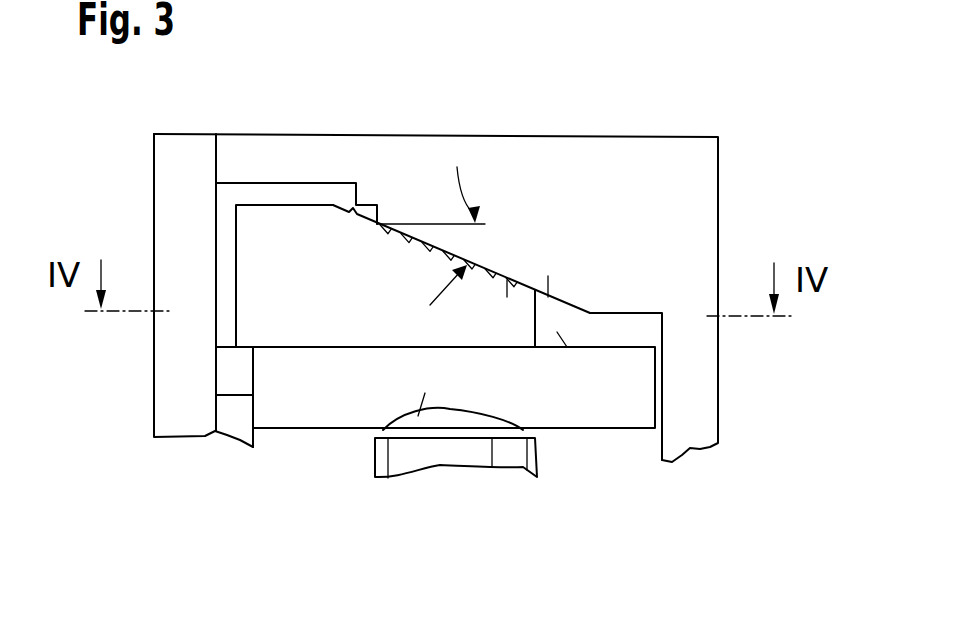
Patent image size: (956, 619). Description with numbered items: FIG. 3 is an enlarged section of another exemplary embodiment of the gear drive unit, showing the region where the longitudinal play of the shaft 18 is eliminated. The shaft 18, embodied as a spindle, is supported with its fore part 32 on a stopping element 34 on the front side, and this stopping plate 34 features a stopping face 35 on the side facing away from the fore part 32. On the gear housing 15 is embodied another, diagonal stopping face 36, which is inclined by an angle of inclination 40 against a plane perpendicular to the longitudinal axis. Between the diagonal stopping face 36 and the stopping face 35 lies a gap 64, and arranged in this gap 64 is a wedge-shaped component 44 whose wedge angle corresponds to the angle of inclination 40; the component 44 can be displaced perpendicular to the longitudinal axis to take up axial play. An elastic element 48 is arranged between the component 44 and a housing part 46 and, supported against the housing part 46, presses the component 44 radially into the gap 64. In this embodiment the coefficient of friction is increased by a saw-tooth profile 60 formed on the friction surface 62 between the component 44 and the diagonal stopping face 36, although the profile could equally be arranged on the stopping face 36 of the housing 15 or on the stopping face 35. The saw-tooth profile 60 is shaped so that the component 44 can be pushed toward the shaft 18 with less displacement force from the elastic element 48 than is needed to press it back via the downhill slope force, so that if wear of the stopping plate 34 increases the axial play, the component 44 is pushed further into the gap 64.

The gear housing 15 is at (707, 167).
The housing part 46 is at (168, 162).
The elastic element 48 is at (220, 327).
The component 44 is at (265, 270).
The stopping element 34 is at (301, 408).
The saw-tooth profile 60 is at (503, 253).
The angle of inclination 40 is at (463, 235).
The stopping face 36 is at (552, 295).
The gap 64 is at (617, 330).
The stopping face 35 is at (560, 345).
The friction surface 62 is at (507, 280).
The fore part 32 is at (417, 416).
The shaft 18 is at (517, 455).